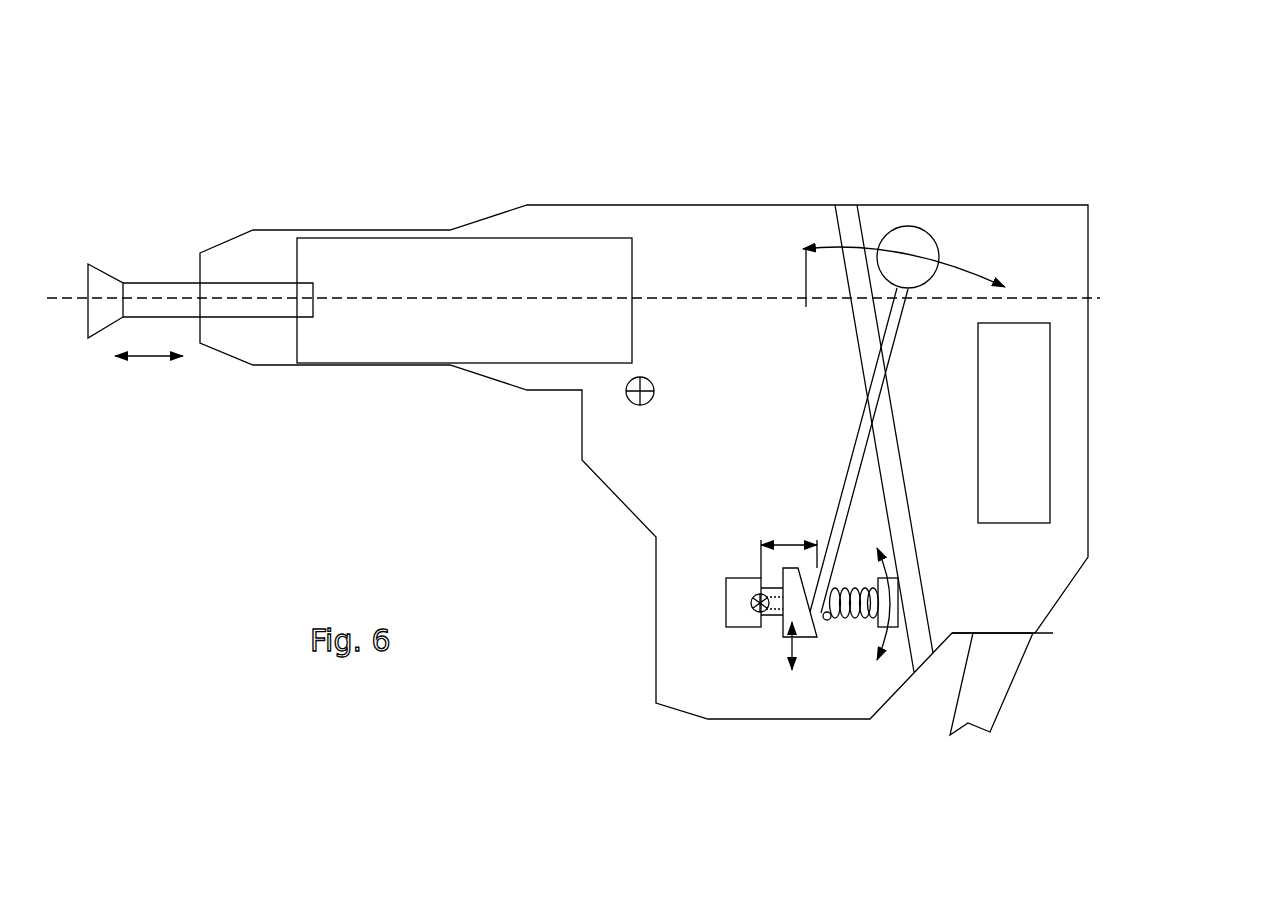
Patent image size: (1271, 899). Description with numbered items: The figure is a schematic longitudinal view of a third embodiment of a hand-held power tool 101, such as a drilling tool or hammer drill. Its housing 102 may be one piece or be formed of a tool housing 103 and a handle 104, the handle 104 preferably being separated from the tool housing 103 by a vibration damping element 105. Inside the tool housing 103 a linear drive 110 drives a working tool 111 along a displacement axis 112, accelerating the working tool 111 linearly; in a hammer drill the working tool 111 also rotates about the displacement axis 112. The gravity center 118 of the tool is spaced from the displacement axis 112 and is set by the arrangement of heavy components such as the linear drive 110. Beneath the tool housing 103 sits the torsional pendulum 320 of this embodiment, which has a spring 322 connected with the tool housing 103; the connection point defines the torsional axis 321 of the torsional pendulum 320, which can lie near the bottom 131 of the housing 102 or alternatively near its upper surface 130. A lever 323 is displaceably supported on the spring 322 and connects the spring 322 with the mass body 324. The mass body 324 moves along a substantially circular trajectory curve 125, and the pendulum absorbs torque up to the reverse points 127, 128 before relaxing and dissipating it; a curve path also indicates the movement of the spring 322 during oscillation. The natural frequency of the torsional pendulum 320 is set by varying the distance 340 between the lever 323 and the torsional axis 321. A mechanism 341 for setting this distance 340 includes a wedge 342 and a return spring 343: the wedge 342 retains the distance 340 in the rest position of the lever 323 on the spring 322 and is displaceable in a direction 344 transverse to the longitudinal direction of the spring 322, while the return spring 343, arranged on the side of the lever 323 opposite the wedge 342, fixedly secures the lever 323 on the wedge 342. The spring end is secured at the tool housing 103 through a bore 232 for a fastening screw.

The hand-held power tool 101 is at (273, 93).
The housing 102 is at (757, 96).
The tool housing 103 is at (799, 205).
The handle 104 is at (890, 205).
The vibration damping element 105 is at (848, 205).
The linear drive 110 is at (610, 238).
The working tool 111 is at (152, 282).
The displacement axis 112 is at (65, 298).
The gravity center 118 is at (627, 402).
The trajectory curve 125 is at (962, 270).
The reverse point 127 is at (806, 250).
The reverse point 128 is at (978, 335).
The upper surface 130 is at (943, 205).
The bottom 131 is at (723, 720).
The bore 232 is at (740, 617).
The torsional pendulum 320 is at (1194, 318).
The torsional axis 321 is at (750, 602).
The spring 322 is at (892, 603).
The lever 323 is at (900, 322).
The mass body 324 is at (927, 248).
The distance 340 is at (790, 540).
The mechanism for setting the distance 341 is at (735, 813).
The wedge 342 is at (803, 630).
The return spring 343 is at (857, 622).
The direction 344 is at (788, 643).